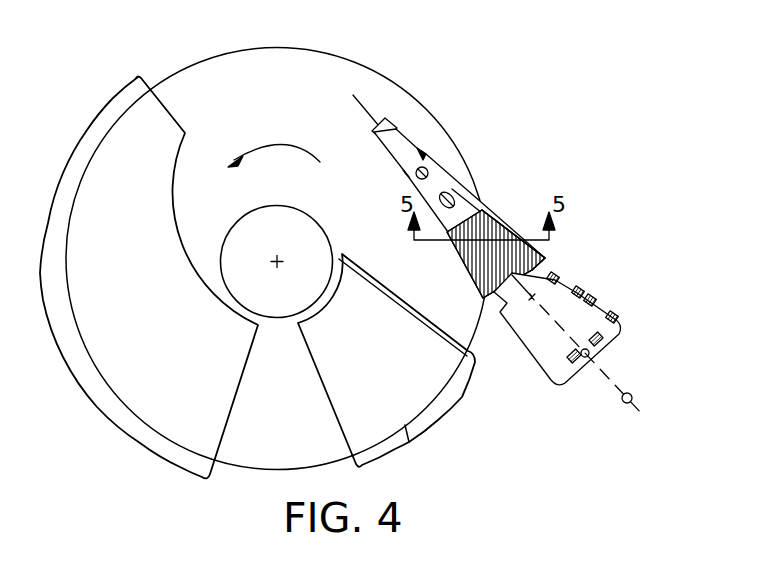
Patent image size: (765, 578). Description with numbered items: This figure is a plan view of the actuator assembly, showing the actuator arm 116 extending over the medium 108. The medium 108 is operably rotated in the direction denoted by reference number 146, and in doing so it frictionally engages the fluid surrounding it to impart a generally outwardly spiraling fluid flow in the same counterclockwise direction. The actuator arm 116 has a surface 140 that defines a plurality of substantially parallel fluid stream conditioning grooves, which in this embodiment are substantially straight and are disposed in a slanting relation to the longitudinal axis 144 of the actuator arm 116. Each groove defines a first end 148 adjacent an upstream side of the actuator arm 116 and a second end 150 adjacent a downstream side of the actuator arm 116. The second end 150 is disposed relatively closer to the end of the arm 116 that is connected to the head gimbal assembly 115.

The medium 108 is at (363, 60).
The head gimbal assembly 115 is at (514, 241).
The actuator arm 116 is at (585, 331).
The surface 140 is at (449, 236).
The longitudinal axis 144 is at (632, 395).
The direction of rotation 146 is at (258, 148).
The first end 148 is at (466, 279).
The second end 150 is at (490, 210).